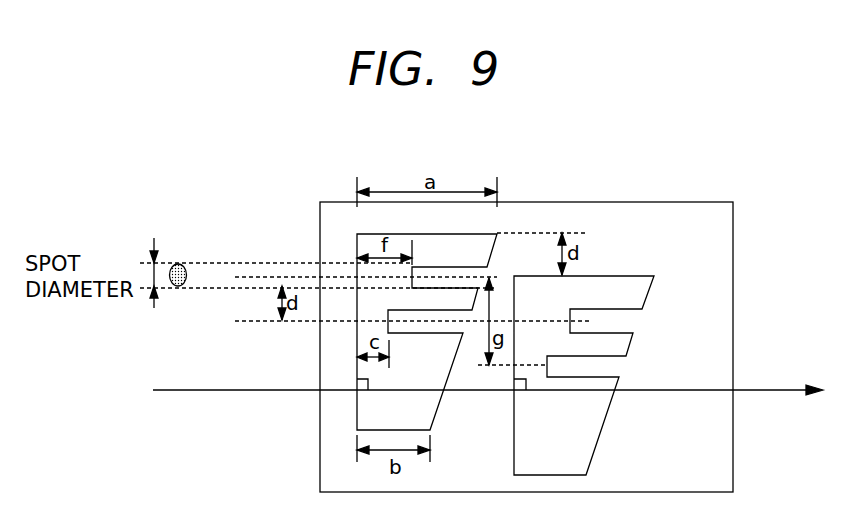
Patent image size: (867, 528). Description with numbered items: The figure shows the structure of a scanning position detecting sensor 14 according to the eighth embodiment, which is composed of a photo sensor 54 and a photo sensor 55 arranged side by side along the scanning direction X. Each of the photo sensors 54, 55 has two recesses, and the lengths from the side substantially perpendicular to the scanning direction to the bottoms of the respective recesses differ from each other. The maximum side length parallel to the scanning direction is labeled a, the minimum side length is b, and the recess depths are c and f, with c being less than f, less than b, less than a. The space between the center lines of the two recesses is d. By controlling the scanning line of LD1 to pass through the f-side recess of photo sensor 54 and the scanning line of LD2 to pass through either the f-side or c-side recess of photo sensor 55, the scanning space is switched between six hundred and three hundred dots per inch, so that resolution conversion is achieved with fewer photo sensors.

The scanning position detecting sensor 14 is at (608, 202).
The photo sensor 54 is at (358, 410).
The photo sensor 55 is at (514, 447).
The scan axis X is at (190, 388).